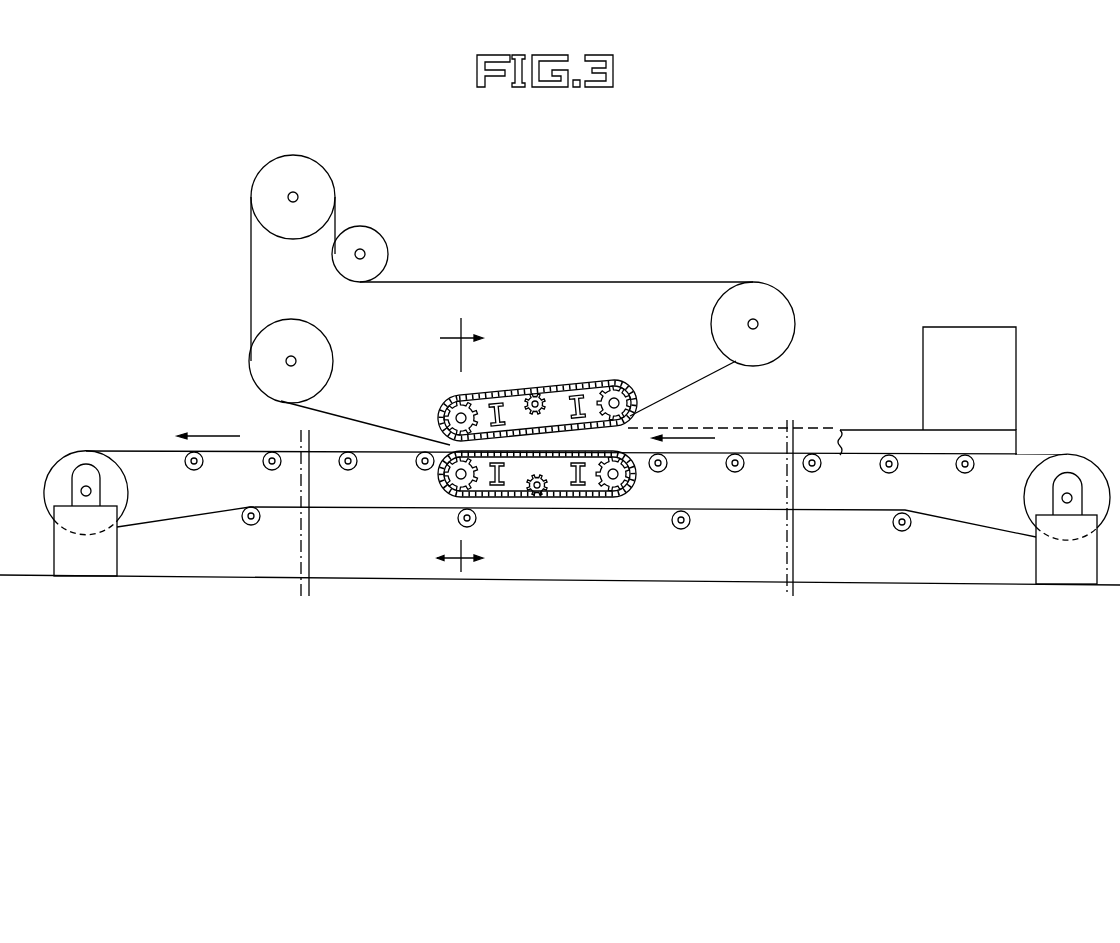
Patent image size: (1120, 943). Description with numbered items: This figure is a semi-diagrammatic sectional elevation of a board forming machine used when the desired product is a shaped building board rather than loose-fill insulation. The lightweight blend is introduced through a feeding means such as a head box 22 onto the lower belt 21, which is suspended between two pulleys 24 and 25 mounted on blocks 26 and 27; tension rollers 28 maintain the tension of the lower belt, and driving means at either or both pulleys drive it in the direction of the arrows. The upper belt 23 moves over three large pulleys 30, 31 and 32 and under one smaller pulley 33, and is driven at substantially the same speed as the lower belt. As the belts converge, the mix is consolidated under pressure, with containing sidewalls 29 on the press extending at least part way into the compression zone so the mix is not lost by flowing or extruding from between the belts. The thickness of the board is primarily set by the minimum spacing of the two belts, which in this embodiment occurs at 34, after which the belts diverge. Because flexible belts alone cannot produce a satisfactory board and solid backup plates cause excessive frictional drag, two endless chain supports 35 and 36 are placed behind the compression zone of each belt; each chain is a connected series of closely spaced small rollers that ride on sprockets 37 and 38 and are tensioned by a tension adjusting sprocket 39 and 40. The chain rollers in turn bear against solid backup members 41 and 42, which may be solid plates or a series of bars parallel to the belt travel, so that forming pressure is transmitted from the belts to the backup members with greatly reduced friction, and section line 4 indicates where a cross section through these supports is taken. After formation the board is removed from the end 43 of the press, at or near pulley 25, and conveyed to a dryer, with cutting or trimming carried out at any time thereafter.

The section line 4- 4 is at (450, 437).
The lower belt 21 is at (752, 452).
The head box 22 is at (985, 338).
The upper belt 23 is at (605, 282).
The pulley 24 is at (1038, 490).
The pulley 25 is at (85, 455).
The block 26 is at (1070, 572).
The block 27 is at (100, 567).
The tension rollers 28 is at (256, 520).
The containing sidewalls 29 is at (1003, 443).
The large pulley 30 is at (268, 341).
The large pulley 31 is at (768, 304).
The large pulley 32 is at (300, 170).
The smaller pulley 33 is at (368, 240).
The minimum spacing 34 is at (455, 444).
The endless chain support 35 is at (525, 498).
The endless chain support 36 is at (596, 386).
The sprockets 37 is at (452, 478).
The sprockets 38 is at (456, 412).
The tension adjusting sprocket 39 is at (547, 490).
The tension adjusting sprocket 40 is at (557, 398).
The backup member 41 is at (557, 484).
The backup member 42 is at (538, 396).
The end of the press 43 is at (43, 427).